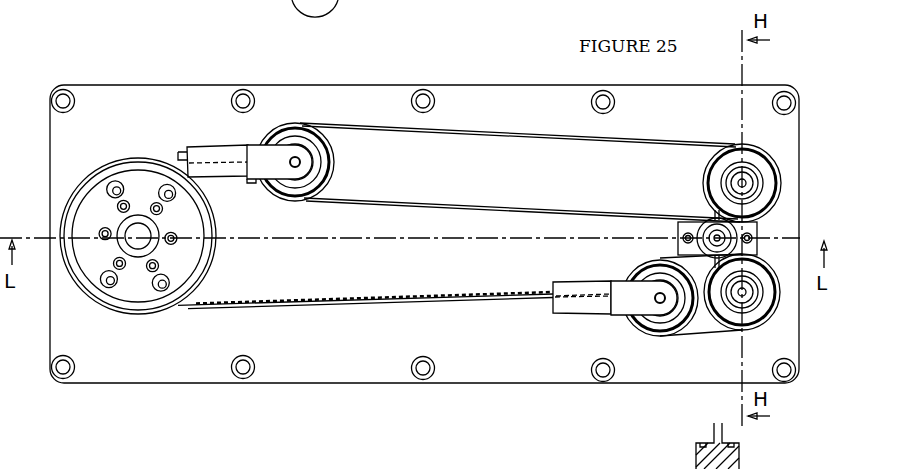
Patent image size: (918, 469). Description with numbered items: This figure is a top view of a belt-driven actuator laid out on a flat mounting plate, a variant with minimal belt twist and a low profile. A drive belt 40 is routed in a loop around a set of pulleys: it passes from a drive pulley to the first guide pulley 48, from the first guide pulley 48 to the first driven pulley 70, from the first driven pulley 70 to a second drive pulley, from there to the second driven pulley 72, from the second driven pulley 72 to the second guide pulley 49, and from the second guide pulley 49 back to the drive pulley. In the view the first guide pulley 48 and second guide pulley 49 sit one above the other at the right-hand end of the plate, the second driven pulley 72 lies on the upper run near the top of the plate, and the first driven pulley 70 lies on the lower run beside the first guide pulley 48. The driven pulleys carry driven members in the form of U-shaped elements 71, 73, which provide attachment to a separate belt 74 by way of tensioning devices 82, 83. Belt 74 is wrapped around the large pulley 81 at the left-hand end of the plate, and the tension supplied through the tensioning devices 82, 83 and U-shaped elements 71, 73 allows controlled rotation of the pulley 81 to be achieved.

The drive belt 40 is at (497, 133).
The first guide pulley 48 is at (778, 315).
The second guide pulley 49 is at (779, 173).
The first driven pulley 70 is at (653, 337).
The U-shaped element 71 is at (609, 312).
The second driven pulley 72 is at (335, 135).
The U-shaped element 73 is at (248, 138).
The belt 74 is at (317, 305).
The pulley 81 is at (192, 300).
The tensioning device 82 is at (193, 142).
The tensioning device 83 is at (552, 313).